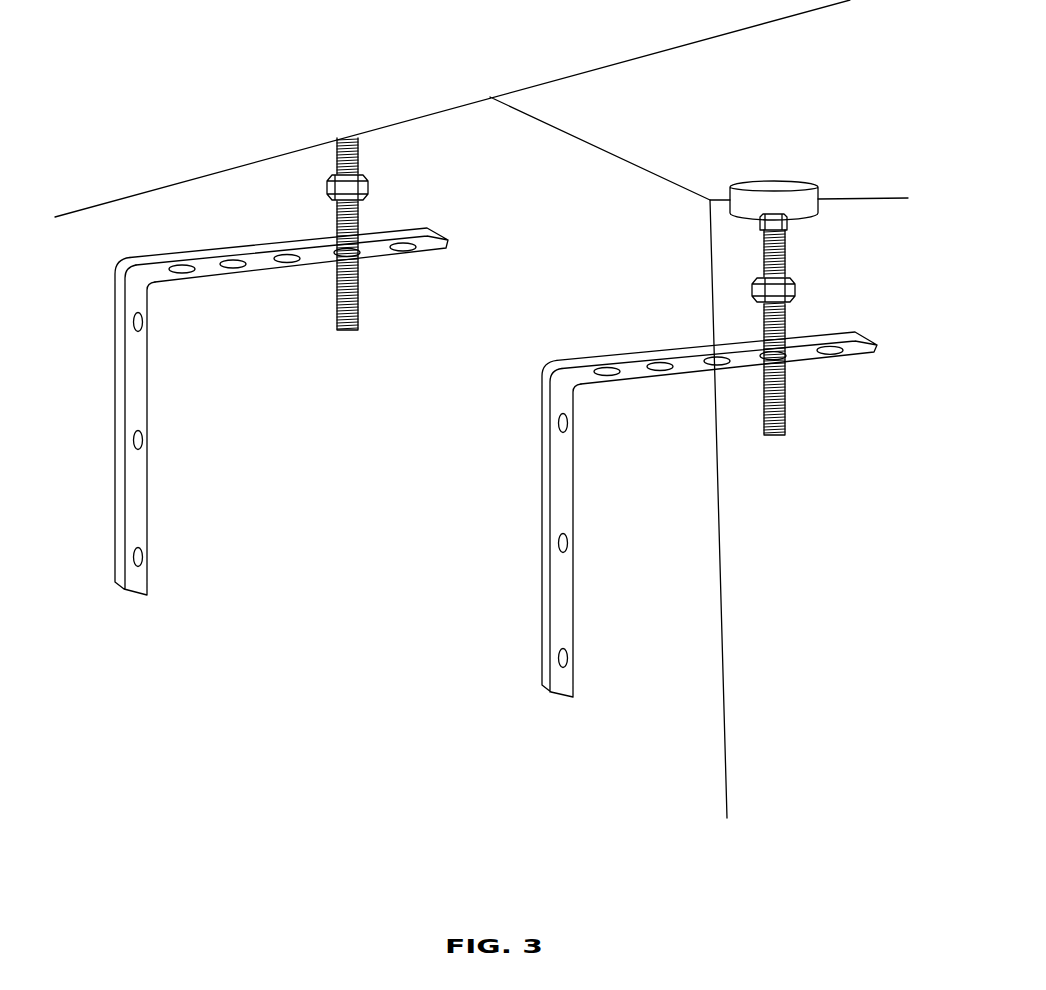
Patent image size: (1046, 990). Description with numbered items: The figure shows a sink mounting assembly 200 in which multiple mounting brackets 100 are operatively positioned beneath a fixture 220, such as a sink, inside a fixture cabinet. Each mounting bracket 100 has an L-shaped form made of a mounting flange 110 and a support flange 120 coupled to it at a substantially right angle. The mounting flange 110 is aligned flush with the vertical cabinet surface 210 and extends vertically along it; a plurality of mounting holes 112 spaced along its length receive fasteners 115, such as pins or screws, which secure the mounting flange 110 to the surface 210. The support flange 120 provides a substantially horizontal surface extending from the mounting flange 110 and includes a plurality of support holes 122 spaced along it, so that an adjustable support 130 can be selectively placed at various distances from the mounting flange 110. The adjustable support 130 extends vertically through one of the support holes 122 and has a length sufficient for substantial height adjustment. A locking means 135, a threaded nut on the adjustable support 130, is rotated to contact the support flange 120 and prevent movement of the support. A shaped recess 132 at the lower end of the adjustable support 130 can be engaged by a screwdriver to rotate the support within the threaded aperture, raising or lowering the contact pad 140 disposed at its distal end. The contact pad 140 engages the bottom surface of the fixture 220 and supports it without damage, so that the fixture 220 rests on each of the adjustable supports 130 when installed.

The mounting bracket 100 is at (177, 211).
The mounting flange 110 is at (138, 497).
The mounting hole 112 is at (103, 340).
The fastener 115 is at (142, 322).
The support flange 120 is at (325, 291).
The support hole 122 is at (330, 271).
The adjustable support 130 is at (360, 217).
The shaped recess 132 is at (349, 339).
The locking means 135 is at (353, 184).
The contact pad 140 is at (774, 182).
The sink mounting assembly 200 is at (205, 79).
The cabinet surface 210 is at (398, 519).
The fixture 220 is at (435, 89).